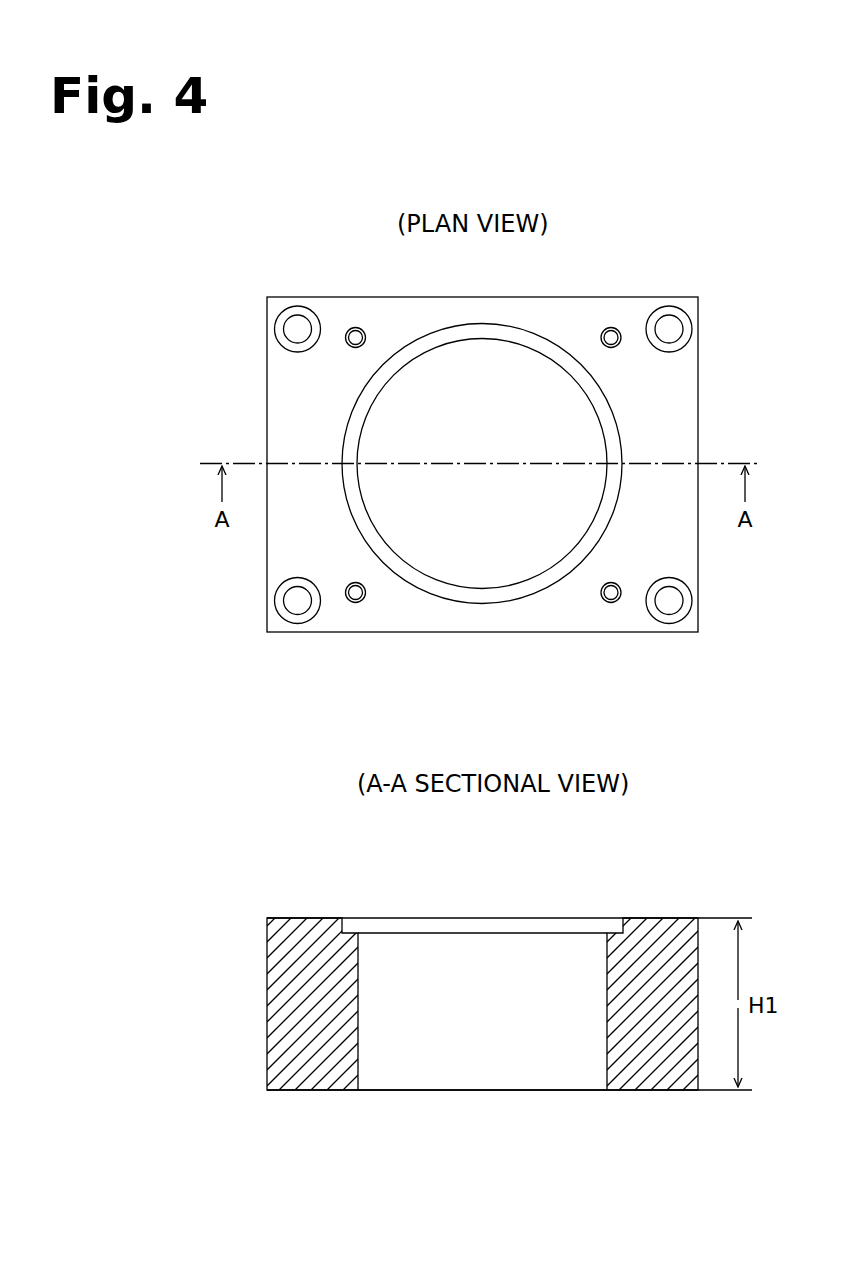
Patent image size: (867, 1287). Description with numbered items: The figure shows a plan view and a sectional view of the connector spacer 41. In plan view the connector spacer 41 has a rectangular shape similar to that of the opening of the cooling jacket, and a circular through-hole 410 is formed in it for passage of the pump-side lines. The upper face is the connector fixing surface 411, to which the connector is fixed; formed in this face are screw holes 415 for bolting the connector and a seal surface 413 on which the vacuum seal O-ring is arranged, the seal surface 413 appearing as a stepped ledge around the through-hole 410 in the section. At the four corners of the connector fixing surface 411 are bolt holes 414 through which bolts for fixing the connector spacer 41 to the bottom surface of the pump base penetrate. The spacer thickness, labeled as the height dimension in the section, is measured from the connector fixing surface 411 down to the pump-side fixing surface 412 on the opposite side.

The connector spacer 41 is at (697, 422).
The circular through-hole 410 is at (382, 395).
The connector fixing surface 411 is at (660, 918).
The pump-side fixing surface 412 is at (658, 1090).
The seal surface 413 is at (393, 563).
The bolt holes 414 is at (669, 601).
The screw holes 415 is at (354, 600).